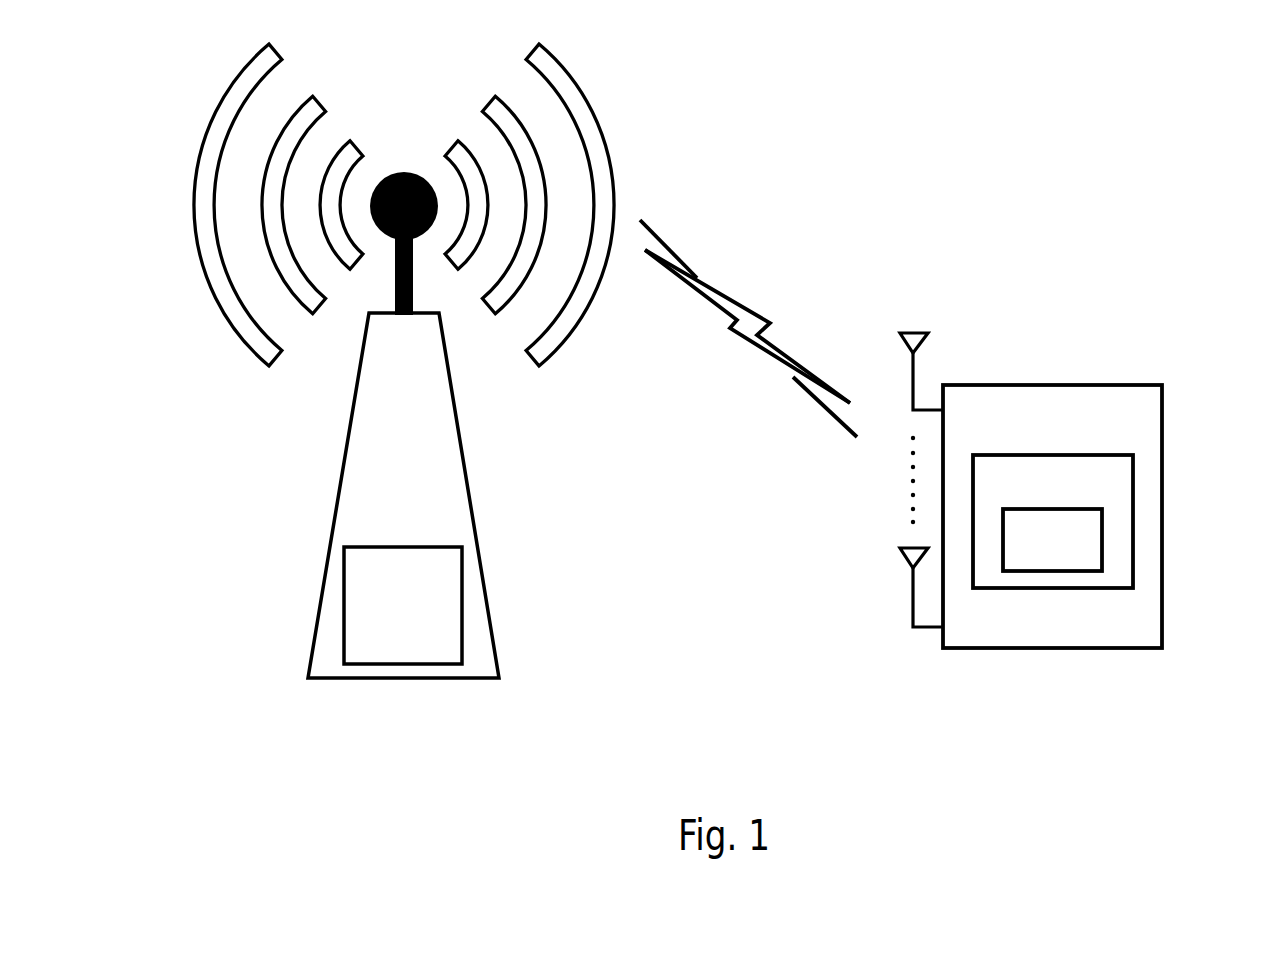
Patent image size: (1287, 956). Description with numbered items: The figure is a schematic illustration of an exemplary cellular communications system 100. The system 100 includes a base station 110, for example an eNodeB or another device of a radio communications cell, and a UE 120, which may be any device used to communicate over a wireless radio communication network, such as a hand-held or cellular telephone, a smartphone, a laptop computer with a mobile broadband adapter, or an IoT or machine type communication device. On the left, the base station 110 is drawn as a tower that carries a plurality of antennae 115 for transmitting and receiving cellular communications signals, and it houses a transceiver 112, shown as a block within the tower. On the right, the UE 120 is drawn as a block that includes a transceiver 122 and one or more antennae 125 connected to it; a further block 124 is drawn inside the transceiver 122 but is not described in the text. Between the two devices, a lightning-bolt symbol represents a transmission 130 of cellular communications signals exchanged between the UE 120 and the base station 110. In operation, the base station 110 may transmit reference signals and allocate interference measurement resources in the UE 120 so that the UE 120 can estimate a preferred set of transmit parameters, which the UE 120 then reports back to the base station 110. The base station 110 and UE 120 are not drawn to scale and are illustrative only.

The cellular communications system 100 is at (868, 125).
The base station 110 is at (470, 497).
The transceiver 112 is at (383, 588).
The antennae 115 is at (398, 170).
The UE 120 is at (1167, 520).
The transceiver 122 is at (1033, 494).
The memory / sub-module 124 is at (1033, 551).
The antennae 125 is at (912, 368).
The transmission 130 is at (737, 285).